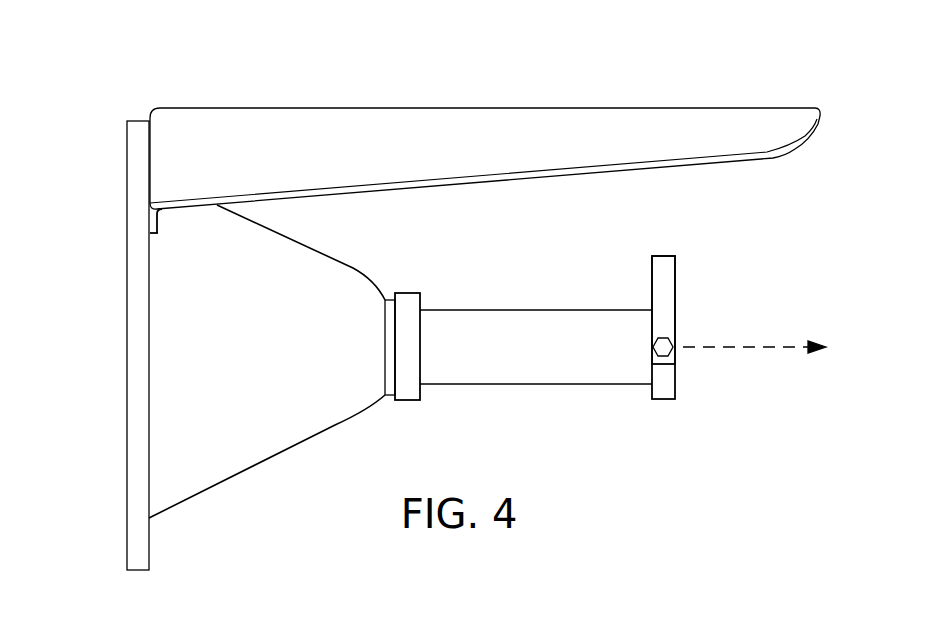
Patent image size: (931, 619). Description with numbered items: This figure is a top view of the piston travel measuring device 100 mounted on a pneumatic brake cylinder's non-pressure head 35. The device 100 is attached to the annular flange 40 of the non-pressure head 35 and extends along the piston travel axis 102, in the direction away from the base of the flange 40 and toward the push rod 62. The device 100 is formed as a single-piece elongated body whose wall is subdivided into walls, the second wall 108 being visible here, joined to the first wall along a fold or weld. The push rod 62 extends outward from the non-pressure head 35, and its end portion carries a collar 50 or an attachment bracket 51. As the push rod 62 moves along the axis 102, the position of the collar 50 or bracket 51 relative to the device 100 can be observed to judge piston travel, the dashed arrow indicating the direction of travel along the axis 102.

The piston travel measuring device 100 is at (513, 83).
The second wall 108 is at (702, 137).
The non-pressure head 35 is at (104, 505).
The annular flange 40 is at (135, 328).
The push rod 62 is at (552, 352).
The collar 50 is at (665, 390).
The attachment bracket 51 is at (663, 282).
The piston travel axis 102 is at (765, 350).